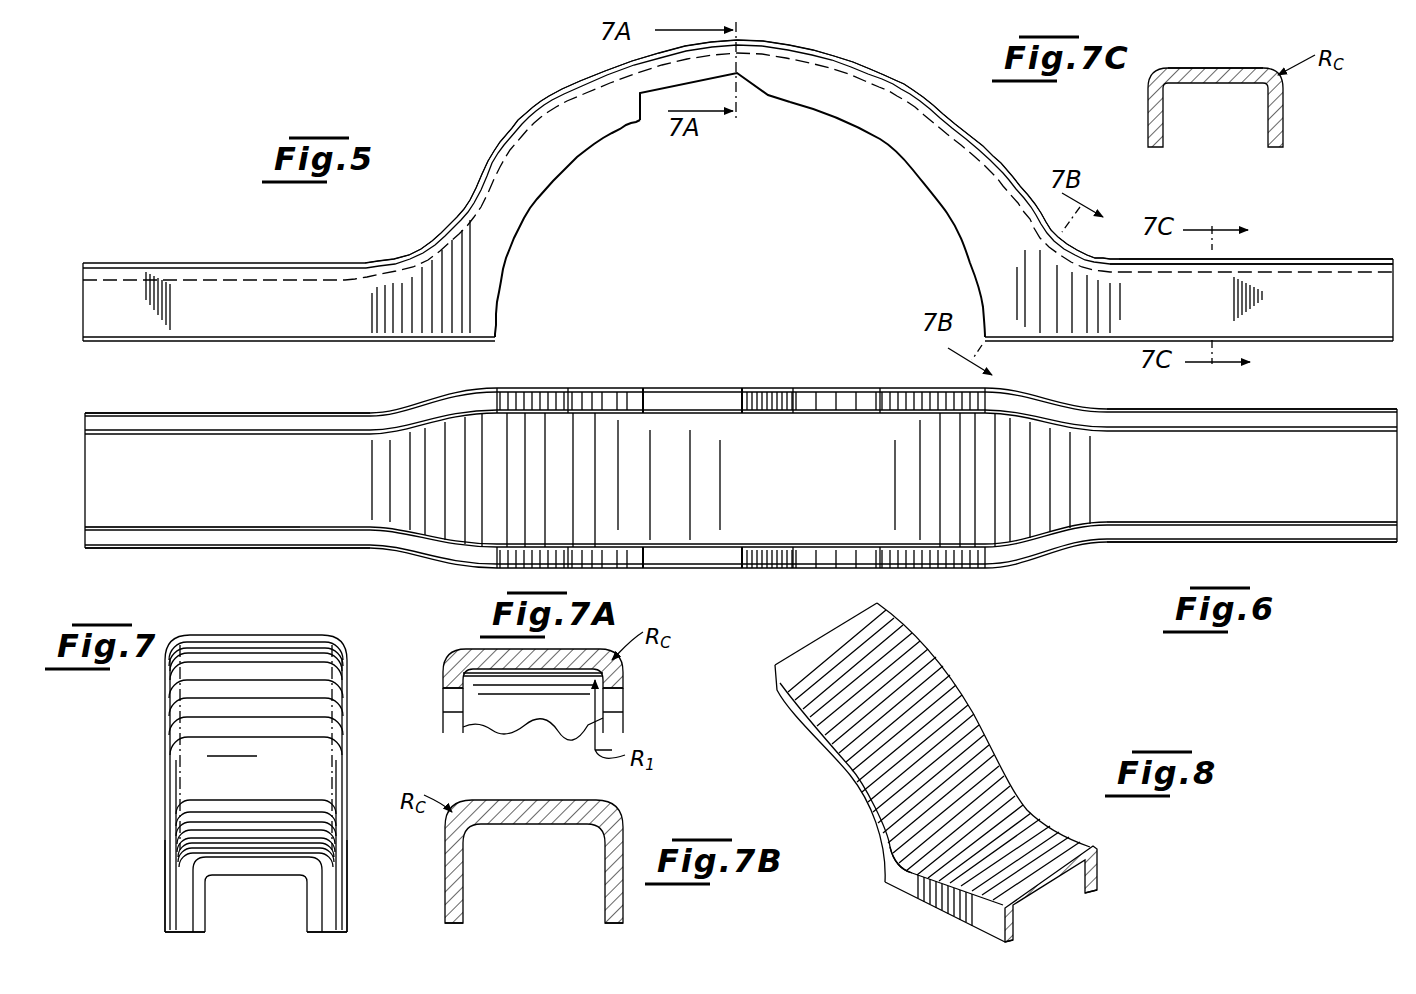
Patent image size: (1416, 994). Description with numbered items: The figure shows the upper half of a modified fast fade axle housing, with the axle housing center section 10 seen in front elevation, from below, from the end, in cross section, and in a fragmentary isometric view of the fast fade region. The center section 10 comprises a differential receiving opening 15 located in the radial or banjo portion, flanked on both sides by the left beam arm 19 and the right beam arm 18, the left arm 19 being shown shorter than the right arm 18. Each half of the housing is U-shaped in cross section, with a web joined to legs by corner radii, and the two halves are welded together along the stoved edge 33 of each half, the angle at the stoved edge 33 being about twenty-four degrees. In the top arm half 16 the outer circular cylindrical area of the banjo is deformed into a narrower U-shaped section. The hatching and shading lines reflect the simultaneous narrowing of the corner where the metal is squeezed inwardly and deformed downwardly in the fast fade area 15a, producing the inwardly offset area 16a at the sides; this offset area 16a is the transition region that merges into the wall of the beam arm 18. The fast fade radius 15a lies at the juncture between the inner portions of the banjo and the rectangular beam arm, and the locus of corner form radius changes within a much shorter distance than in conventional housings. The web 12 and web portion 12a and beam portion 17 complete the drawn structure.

In FIG. 5, the axle housing center section 10 is at (525, 95).
In FIG. 6, the axle housing center section 10 is at (741, 478).
In FIG. 7, the axle housing center section 10 is at (264, 628).
In FIG. 5, the web 12 is at (512, 132).
In FIG. 6, the web 12 is at (612, 420).
In FIG. 7, the web 12 is at (238, 648).
In FIG. 7A, the web 12 is at (468, 650).
In FIG. 8, the web 12 is at (830, 652).
In FIG. 5, the raised web portion 12a is at (772, 90).
In FIG. 6, the raised web portion 12a is at (722, 396).
In FIG. 7A, the raised web portion 12a is at (622, 703).
In FIG. 5, the differential receiving opening 15 is at (912, 172).
In FIG. 6, the differential receiving opening 15 is at (845, 396).
In FIG. 7A, the differential receiving opening 15 is at (443, 722).
In FIG. 5, the fast fade area 15a is at (420, 242).
In FIG. 7, the fast fade area 15a is at (205, 843).
In FIG. 7B, the fast fade area 15a is at (530, 810).
In FIG. 8, the fast fade area 15a is at (930, 840).
In FIG. 5, the top arm half 16 is at (1295, 256).
In FIG. 7, the top arm half 16 is at (268, 855).
In FIG. 7C, the top arm half 16 is at (1213, 66).
In FIG. 8, the top arm half 16 is at (1025, 874).
In FIG. 5, the offset area 16a is at (415, 290).
In FIG. 6, the offset area 16a is at (405, 412).
In FIG. 7, the offset area 16a is at (330, 893).
In FIG. 8, the offset area 16a is at (1030, 806).
In FIG. 5, the left leg portion 17 is at (238, 262).
In FIG. 5, the right beam arm 18 is at (1345, 258).
In FIG. 6, the right beam arm 18 is at (1315, 515).
In FIG. 7, the right beam arm 18 is at (230, 865).
In FIG. 7C, the right beam arm 18 is at (1256, 68).
In FIG. 8, the right beam arm 18 is at (1075, 833).
In FIG. 5, the left beam arm 19 is at (153, 262).
In FIG. 6, the left beam arm 19 is at (170, 522).
In FIG. 5, the stoved edge 33 is at (233, 340).
In FIG. 6, the stoved edge 33 is at (135, 412).
In FIG. 7, the stoved edge 33 is at (180, 933).
In FIG. 7B, the stoved edge 33 is at (442, 922).
In FIG. 8, the stoved edge 33 is at (1097, 890).